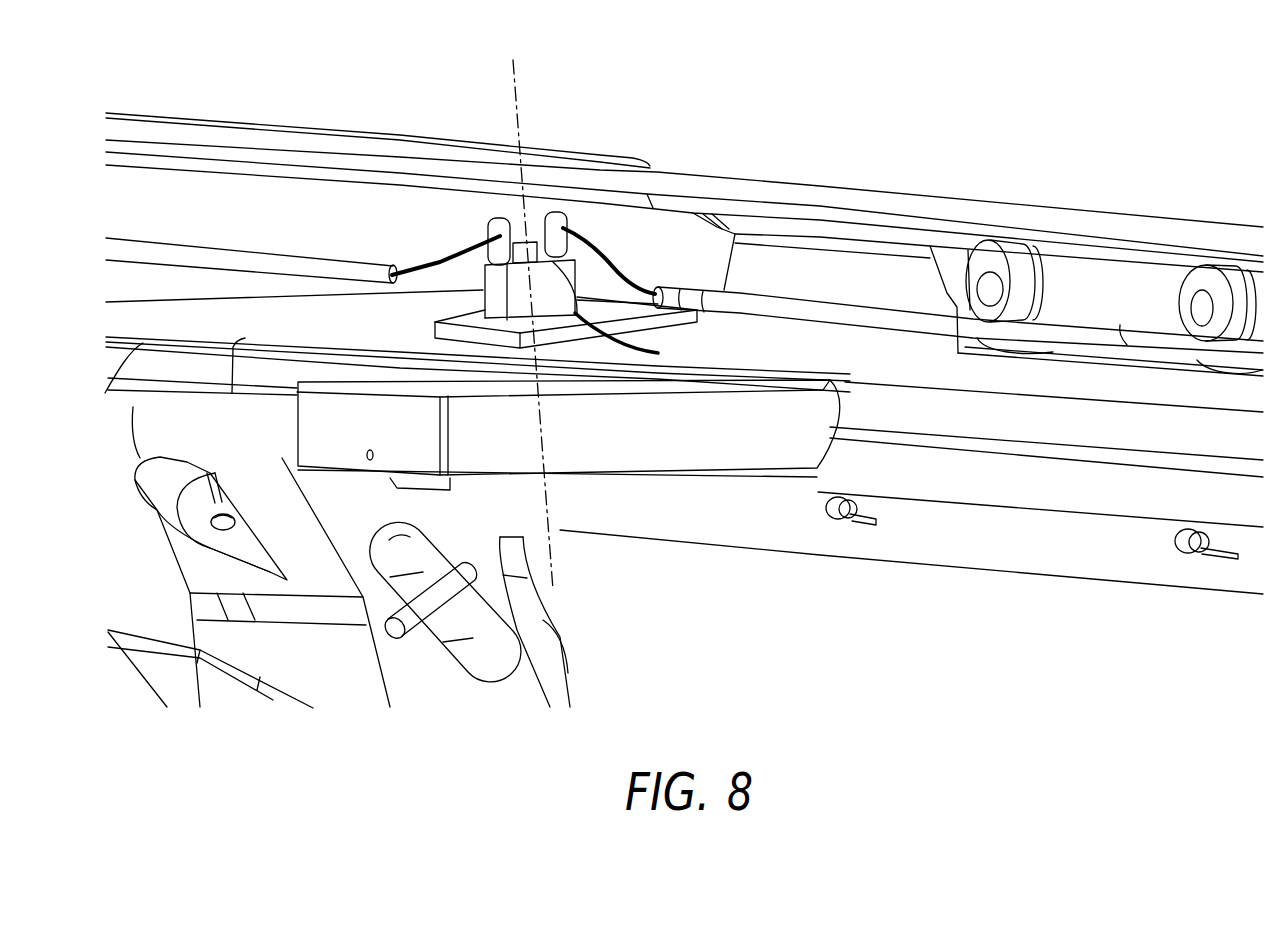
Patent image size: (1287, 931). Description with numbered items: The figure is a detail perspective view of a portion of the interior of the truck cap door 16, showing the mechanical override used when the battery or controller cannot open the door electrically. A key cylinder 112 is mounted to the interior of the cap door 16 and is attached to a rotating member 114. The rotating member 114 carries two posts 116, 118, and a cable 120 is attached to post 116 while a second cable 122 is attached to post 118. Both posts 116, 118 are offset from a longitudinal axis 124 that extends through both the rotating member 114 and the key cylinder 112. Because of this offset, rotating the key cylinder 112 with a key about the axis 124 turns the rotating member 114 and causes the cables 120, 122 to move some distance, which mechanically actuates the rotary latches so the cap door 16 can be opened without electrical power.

The cap door 16 is at (1105, 175).
The key cylinder 112 is at (483, 292).
The rotating member 114 is at (643, 341).
The post 116 is at (497, 222).
The post 118 is at (563, 215).
The cable 120 is at (333, 257).
The second cable 122 is at (741, 292).
The longitudinal axis 124 is at (517, 95).